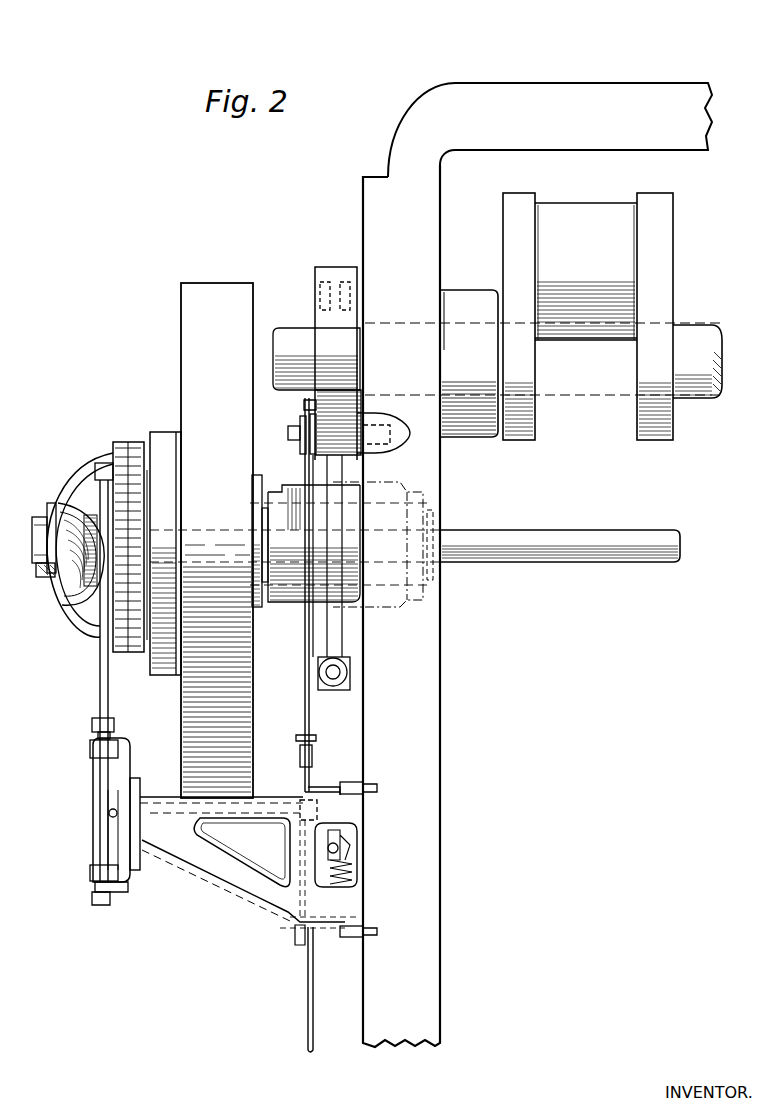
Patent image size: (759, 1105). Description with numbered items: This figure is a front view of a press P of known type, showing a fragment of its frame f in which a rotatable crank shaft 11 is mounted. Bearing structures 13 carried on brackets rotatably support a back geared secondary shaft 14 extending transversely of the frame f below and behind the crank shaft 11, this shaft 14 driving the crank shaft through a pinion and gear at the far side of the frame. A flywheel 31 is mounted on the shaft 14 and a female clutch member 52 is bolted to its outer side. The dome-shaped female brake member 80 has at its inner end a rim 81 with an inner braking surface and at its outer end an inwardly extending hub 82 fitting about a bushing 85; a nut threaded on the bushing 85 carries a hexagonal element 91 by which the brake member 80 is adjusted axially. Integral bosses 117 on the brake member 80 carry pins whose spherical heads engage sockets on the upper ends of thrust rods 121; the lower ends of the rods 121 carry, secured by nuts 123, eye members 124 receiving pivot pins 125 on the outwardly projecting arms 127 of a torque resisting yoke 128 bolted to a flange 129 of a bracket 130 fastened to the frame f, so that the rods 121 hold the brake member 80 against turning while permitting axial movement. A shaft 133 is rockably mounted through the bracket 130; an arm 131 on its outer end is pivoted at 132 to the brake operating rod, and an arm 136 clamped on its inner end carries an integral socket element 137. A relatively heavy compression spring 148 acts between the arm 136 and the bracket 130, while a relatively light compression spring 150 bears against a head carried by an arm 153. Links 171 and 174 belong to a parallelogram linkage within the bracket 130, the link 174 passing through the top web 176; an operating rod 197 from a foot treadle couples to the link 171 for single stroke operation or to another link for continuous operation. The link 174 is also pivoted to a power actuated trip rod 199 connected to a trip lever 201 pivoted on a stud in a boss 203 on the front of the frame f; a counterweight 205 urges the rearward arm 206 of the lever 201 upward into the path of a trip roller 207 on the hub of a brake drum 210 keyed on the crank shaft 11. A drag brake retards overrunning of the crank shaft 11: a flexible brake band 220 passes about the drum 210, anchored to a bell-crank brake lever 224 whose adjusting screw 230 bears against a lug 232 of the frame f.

The press P is at (485, 88).
The frame f is at (425, 928).
The crank shaft 11 is at (601, 194).
The bearing structure 13 is at (296, 480).
The secondary shaft 14 is at (540, 563).
The flywheel 31 is at (214, 292).
The female clutch member 52 is at (163, 432).
The female brake member 80 is at (79, 460).
The rim 81 is at (122, 452).
The hub 82 is at (60, 532).
The bushing 85 is at (40, 568).
The hexagonal element 91 is at (33, 522).
The bosses 117 is at (68, 590).
The thrust rods 121 is at (99, 652).
The nuts 123 is at (91, 724).
The eye members 124 is at (89, 748).
The pivot pins 125 is at (112, 734).
The arms 127 is at (126, 752).
The torque resisting yoke 128 is at (128, 882).
The flange 129 is at (136, 779).
The bracket 130 is at (99, 782).
The arm 131 is at (105, 840).
The pivot 132 is at (89, 873).
The shaft 133 is at (240, 822).
The arm 136 is at (323, 832).
The socket element 137 is at (349, 838).
The compression spring 148 is at (338, 890).
The compression spring 150 is at (357, 884).
The arm 153 is at (339, 849).
The link 171 is at (296, 932).
The link 174 is at (300, 777).
The top web 176 is at (326, 782).
The operating rod 197 is at (308, 1014).
The trip rod 199 is at (305, 622).
The trip lever 201 is at (287, 432).
The boss 203 is at (378, 413).
The counterweight 205 is at (300, 452).
The rearward arm 206 is at (300, 418).
The trip roller 207 is at (304, 406).
The brake drum 210 is at (321, 296).
The brake band 220 is at (333, 267).
The bell-crank brake lever 224 is at (340, 492).
The adjusting screw 230 is at (333, 682).
The lug 232 is at (350, 670).